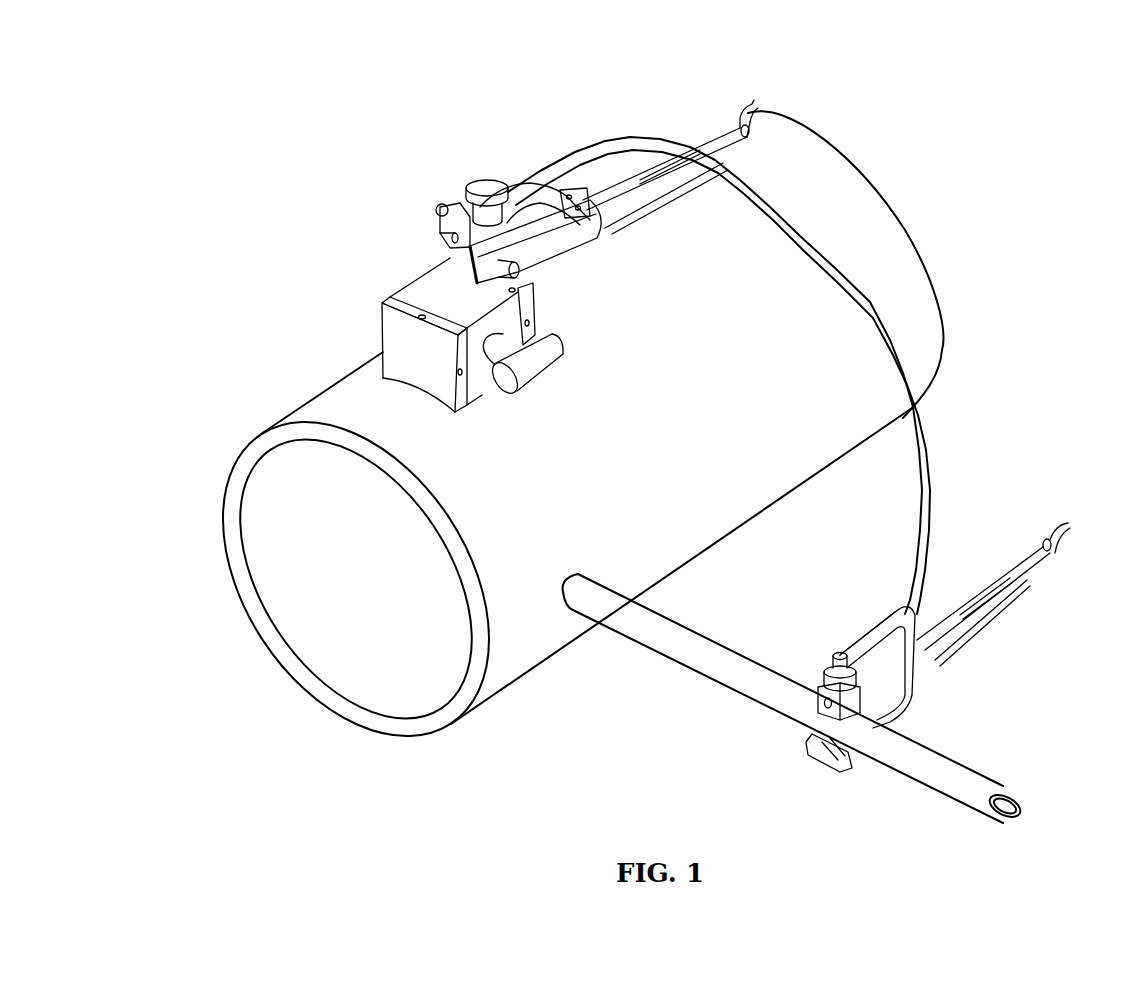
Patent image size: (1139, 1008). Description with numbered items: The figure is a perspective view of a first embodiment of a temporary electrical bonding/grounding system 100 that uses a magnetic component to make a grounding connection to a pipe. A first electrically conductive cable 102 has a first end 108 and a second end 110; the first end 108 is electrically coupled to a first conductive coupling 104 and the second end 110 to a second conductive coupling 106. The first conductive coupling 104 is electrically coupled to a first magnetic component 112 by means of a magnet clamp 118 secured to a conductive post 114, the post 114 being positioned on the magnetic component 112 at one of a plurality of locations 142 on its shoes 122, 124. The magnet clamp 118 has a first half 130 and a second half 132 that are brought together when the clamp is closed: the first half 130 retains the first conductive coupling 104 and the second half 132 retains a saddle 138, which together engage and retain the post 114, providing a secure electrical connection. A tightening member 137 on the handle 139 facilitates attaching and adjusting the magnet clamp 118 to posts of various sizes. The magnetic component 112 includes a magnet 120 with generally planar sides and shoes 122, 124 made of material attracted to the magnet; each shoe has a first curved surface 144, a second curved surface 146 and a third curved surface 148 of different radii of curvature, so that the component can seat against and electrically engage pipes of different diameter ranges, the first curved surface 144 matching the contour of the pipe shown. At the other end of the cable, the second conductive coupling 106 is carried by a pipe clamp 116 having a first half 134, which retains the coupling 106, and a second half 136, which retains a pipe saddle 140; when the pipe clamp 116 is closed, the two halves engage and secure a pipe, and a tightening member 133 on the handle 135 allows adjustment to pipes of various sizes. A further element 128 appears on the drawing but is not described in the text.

The temporary electrical bonding/grounding system 100 is at (326, 126).
The first electrically conductive cable 102 is at (922, 430).
The first conductive coupling 104 is at (455, 252).
The second conductive coupling 106 is at (822, 680).
The first end 108 is at (528, 196).
The second end 110 is at (860, 687).
The first magnetic component 112 is at (410, 298).
The post 114 is at (487, 186).
The pipe clamp 116 is at (1013, 547).
The magnet clamp 118 is at (683, 187).
The magnet 120 is at (443, 292).
The shoe 122 is at (445, 378).
The shoe 124 is at (536, 303).
The boss 128 is at (540, 372).
The first half 130 is at (460, 210).
The second half 132 is at (602, 218).
The tightening member 133 is at (1062, 522).
The first half 134 is at (877, 627).
The handle 135 is at (988, 590).
The second half 136 is at (845, 762).
The tightening member 137 is at (743, 105).
The saddle 138 is at (590, 245).
The handle 139 is at (707, 140).
The pipe saddle 140 is at (808, 756).
The locations 142 is at (418, 316).
The first curved surface 144 is at (428, 396).
The second curved surface 146 is at (382, 337).
The third curved surface 148 is at (535, 340).